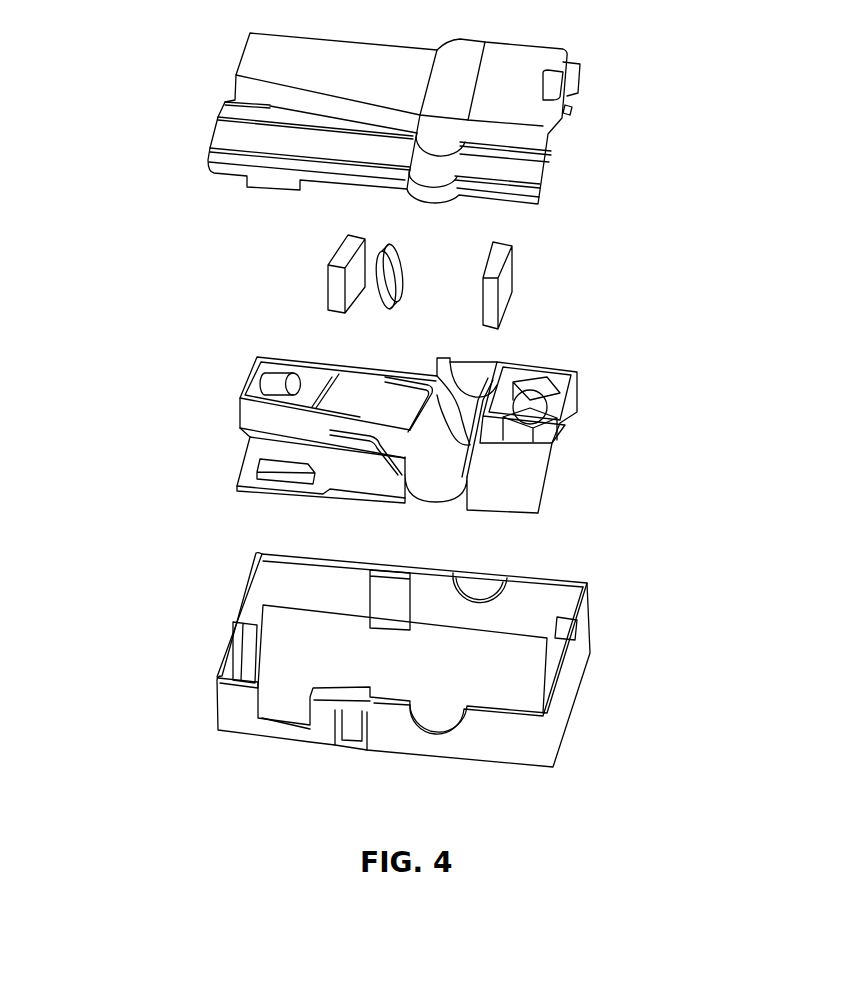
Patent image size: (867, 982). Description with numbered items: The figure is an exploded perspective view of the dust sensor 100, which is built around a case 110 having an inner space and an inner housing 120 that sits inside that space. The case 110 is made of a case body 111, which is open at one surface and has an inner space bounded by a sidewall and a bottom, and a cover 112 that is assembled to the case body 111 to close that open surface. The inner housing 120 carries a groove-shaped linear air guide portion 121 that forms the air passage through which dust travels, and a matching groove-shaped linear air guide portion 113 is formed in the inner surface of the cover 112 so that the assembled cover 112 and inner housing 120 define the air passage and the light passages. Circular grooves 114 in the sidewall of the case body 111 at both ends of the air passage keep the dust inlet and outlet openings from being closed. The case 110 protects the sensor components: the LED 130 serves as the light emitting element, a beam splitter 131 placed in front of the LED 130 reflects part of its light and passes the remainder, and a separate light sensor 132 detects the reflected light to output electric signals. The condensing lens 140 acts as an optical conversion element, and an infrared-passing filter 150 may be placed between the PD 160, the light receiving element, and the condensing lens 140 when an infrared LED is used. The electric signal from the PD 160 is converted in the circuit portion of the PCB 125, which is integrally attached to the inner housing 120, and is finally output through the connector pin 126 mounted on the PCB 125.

The dust sensor 100 is at (728, 251).
The case 110 is at (407, 425).
The case body 111 is at (598, 624).
The cover 112 is at (209, 171).
The air guide portion 113 is at (475, 201).
The circular grooves 114 is at (397, 715).
The inner housing 120 is at (252, 412).
The air guide portion 121 is at (473, 358).
The PCB 125 is at (355, 475).
The connector pin 126 is at (256, 462).
The LED 130 is at (543, 361).
The beam splitter 131 is at (507, 272).
The light sensor 132 is at (553, 425).
The condensing lens 140 is at (402, 271).
The infrared-passing filter 150 is at (342, 255).
The PD 160 is at (280, 372).